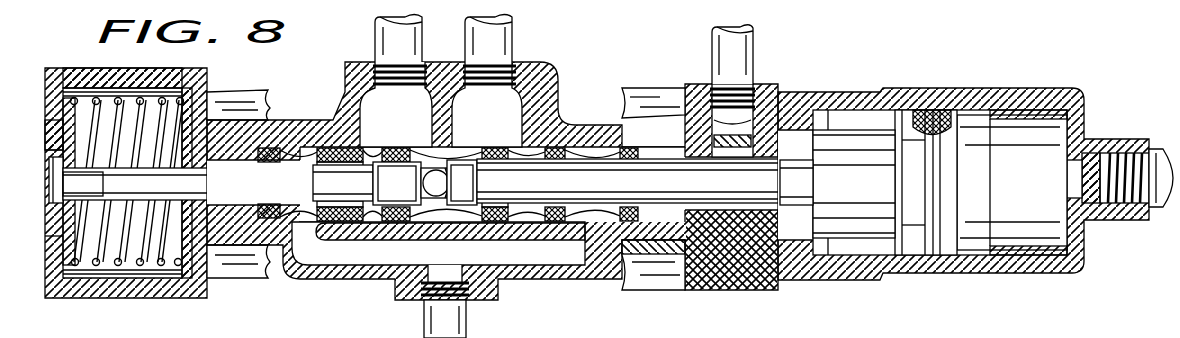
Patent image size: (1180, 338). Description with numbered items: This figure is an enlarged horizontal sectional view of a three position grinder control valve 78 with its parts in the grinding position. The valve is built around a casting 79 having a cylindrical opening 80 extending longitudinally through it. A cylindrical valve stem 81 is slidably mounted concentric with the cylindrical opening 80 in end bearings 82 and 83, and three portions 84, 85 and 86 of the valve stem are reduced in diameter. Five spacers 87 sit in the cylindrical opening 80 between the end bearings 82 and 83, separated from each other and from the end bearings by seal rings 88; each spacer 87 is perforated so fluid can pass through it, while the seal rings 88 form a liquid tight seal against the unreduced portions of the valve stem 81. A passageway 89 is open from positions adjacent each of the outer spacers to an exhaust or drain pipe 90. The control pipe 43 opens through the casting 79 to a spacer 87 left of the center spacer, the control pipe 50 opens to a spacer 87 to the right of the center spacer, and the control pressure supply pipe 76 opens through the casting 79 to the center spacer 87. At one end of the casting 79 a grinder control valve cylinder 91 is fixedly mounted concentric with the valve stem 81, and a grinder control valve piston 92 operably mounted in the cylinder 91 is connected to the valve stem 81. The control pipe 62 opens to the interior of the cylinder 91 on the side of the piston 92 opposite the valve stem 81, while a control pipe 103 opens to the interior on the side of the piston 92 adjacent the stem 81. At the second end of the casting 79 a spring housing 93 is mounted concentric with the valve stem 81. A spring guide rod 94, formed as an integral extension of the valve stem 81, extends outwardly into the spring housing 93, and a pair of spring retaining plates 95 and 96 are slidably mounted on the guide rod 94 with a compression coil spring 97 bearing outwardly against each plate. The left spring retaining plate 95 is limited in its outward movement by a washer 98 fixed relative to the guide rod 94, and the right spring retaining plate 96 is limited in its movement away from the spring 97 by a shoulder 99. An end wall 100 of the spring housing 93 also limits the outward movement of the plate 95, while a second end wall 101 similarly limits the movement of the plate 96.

The control pipe 43 is at (376, 47).
The control pipe 50 is at (512, 40).
The control pipe 62 is at (1148, 212).
The control pressure supply pipe 76 is at (446, 222).
The three position grinder control valve 78 is at (799, 84).
The casting 79 is at (305, 268).
The cylindrical opening 80 is at (605, 147).
The cylindrical valve stem 81 is at (805, 181).
The end bearing 82 is at (238, 160).
The end bearing 83 is at (665, 258).
The reduced portion of valve stem 84 is at (335, 184).
The reduced portion of valve stem 85 is at (420, 181).
The reduced portion of valve stem 86 is at (545, 183).
The spacer 87 is at (300, 150).
The seal ring 88 is at (333, 222).
The passageway 89 is at (398, 258).
The exhaust or drain pipe 90 is at (466, 316).
The grinder control valve cylinder 91 is at (1024, 95).
The grinder control valve piston 92 is at (906, 108).
The spring housing 93 is at (133, 75).
The spring guide rod 94 is at (146, 262).
The spring retaining plate 95 is at (58, 240).
The spring retaining plate 96 is at (184, 290).
The compression coil spring 97 is at (112, 98).
The washer 98 is at (50, 161).
The shoulder 99 is at (226, 268).
The end wall 100 is at (52, 137).
The second end wall 101 is at (213, 92).
The control pipe 103 is at (716, 48).